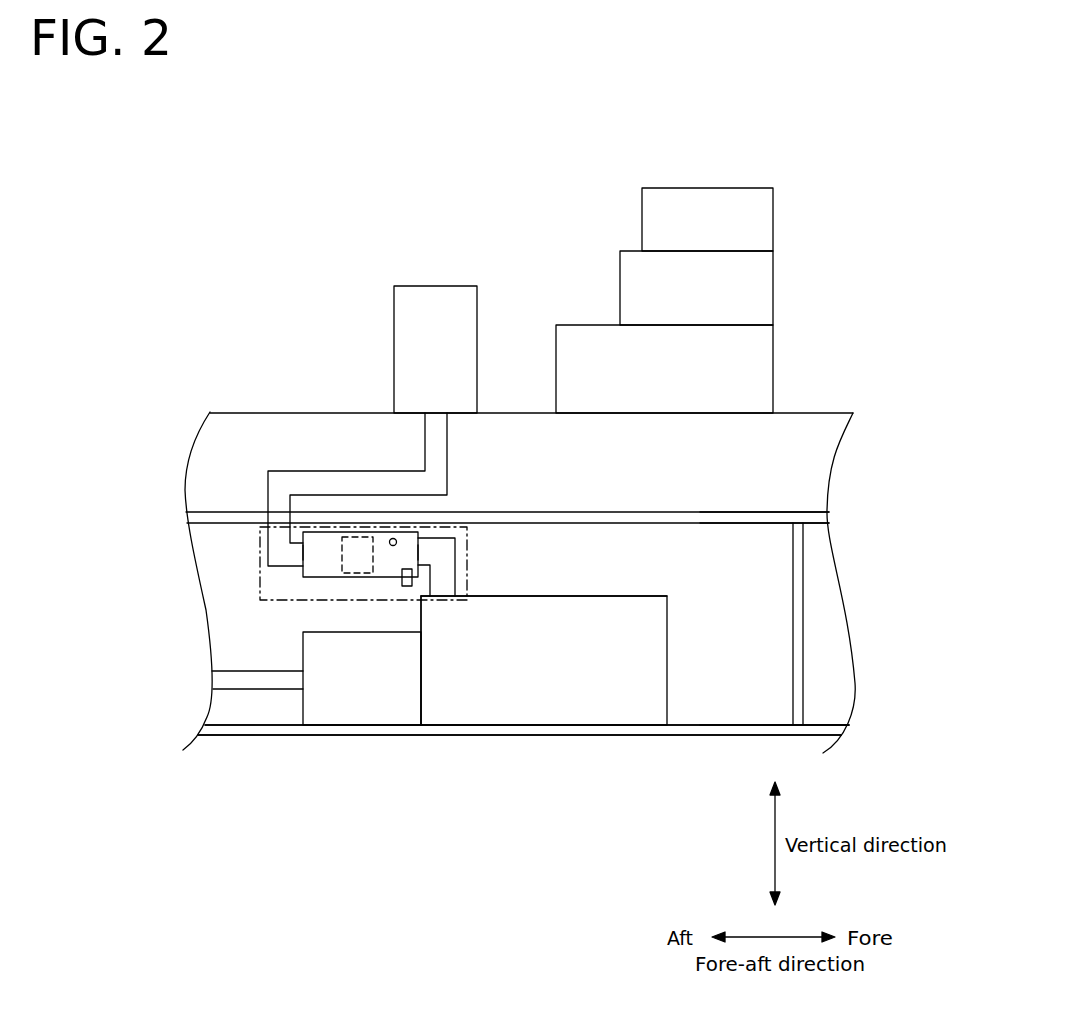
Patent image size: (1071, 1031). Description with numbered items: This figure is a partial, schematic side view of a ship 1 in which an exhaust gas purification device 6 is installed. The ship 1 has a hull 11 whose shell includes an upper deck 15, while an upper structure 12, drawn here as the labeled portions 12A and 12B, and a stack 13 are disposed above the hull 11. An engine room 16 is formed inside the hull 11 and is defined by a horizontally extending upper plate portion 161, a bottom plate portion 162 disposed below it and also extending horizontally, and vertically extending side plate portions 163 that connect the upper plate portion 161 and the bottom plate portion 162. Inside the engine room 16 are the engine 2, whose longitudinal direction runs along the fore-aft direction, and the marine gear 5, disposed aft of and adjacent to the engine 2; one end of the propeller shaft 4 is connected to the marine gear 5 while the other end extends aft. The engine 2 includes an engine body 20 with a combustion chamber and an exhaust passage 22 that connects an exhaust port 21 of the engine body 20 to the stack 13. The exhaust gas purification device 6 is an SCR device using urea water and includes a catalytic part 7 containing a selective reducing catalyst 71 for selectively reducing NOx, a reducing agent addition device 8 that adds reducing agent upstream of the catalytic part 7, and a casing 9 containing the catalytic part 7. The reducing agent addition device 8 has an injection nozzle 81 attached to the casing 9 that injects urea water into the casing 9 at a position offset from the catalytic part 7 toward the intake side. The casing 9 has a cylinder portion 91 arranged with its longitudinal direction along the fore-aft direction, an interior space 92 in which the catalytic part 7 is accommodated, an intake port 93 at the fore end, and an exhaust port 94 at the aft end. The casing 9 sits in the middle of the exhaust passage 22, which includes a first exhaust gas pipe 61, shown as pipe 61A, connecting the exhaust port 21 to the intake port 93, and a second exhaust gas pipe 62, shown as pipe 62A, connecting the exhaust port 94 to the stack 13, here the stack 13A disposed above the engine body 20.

The ship 1 is at (225, 122).
The engine 2 is at (638, 725).
The propeller shaft 4 is at (242, 690).
The marine gear 5 is at (363, 725).
The exhaust gas purification device 6 is at (262, 563).
The catalytic part 7 is at (240, 581).
The selective reducing catalyst 71 is at (355, 583).
The reducing agent addition device 8 is at (260, 617).
The injection nozzle 81 is at (407, 587).
The casing 9 is at (321, 474).
The cylinder portion 91 is at (327, 577).
The interior space 92 is at (393, 538).
The intake port 93 is at (420, 553).
The exhaust port 94 is at (303, 553).
The hull 11 is at (684, 735).
The upper structure 12 is at (738, 300).
The seat cushion 12A is at (774, 413).
The seat back 12B is at (774, 291).
The stack 13 is at (439, 312).
The stack 13A is at (413, 286).
The upper deck 15 is at (815, 510).
The engine room 16 is at (752, 633).
The upper plate portion 161 is at (772, 525).
The bottom plate portion 162 is at (770, 724).
The side plate portions 163 is at (780, 612).
The engine body 20 is at (557, 725).
The exhaust port 21 is at (433, 598).
The exhaust passage 22 is at (490, 598).
The first exhaust gas pipe 61 is at (508, 567).
The first exhaust gas pipe 61A is at (455, 583).
The second exhaust gas pipe 62 is at (326, 462).
The second exhaust gas pipe 62A is at (292, 470).